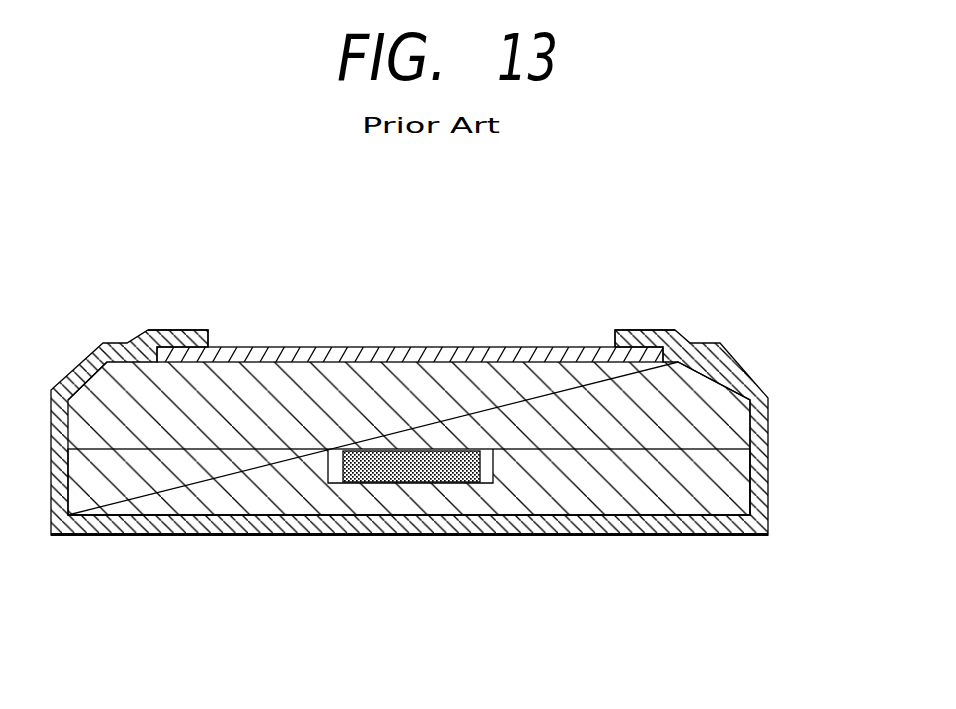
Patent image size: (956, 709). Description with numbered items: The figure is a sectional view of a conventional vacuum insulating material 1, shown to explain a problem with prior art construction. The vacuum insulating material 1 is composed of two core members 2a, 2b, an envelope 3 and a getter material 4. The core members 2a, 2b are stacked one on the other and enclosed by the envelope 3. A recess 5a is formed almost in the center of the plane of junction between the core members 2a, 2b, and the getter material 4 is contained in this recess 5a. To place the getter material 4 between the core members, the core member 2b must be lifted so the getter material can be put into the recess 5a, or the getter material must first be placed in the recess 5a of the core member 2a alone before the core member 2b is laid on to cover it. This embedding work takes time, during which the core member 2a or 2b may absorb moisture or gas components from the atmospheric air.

The vacuum insulating material 1 is at (457, 428).
The core member 2a is at (632, 493).
The core member 2b is at (700, 390).
The envelope 3 is at (178, 330).
The getter material 4 is at (433, 480).
The recess 5a is at (326, 474).